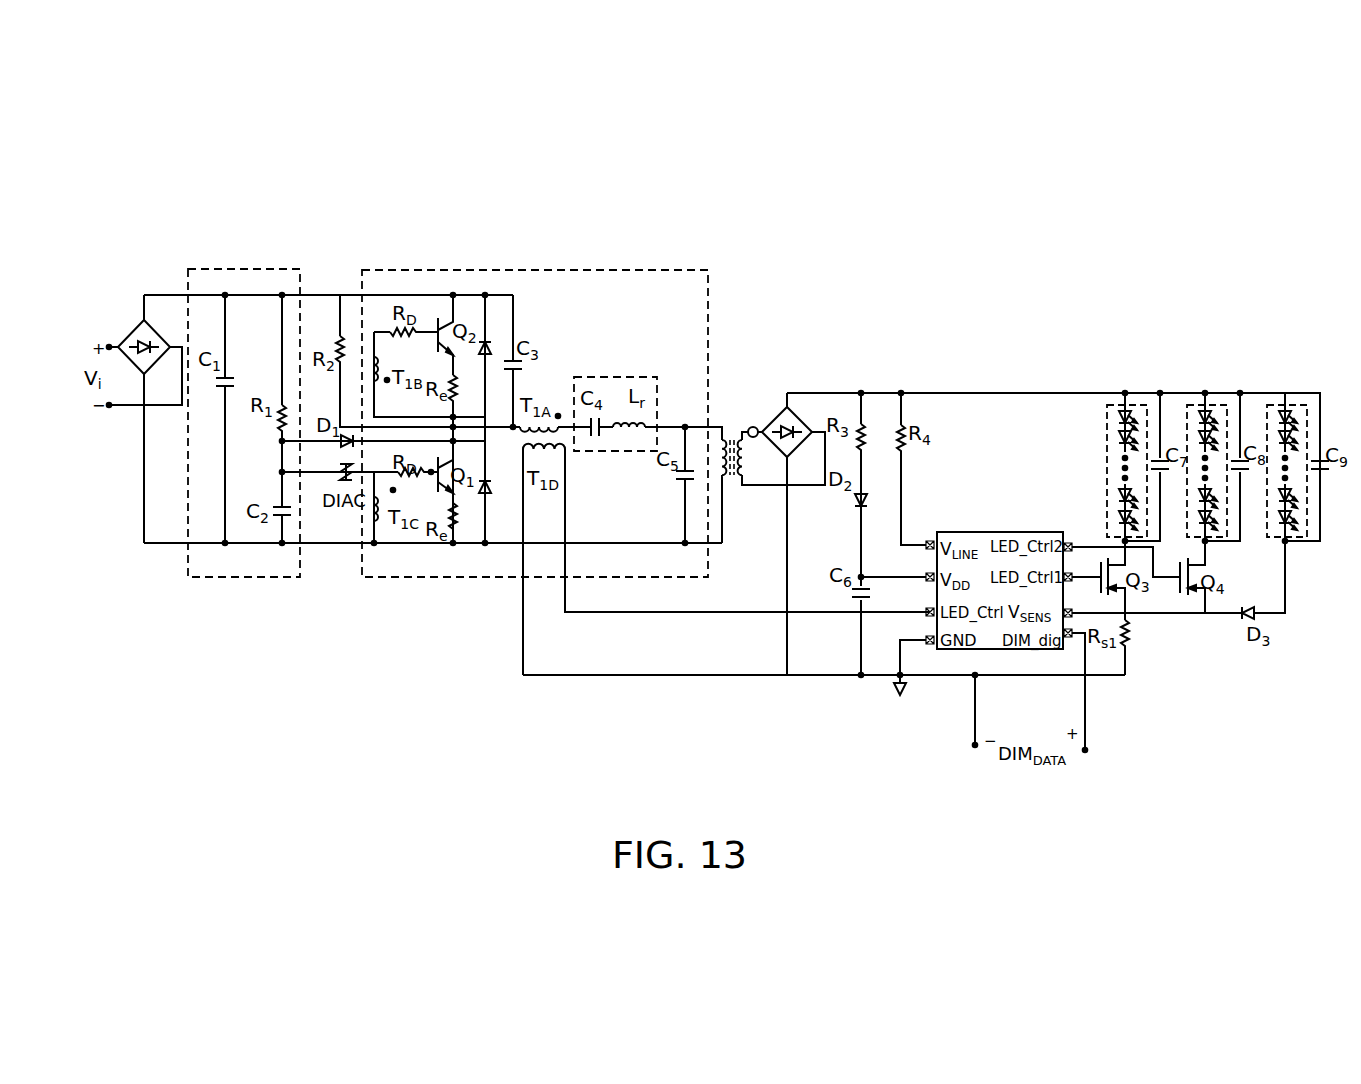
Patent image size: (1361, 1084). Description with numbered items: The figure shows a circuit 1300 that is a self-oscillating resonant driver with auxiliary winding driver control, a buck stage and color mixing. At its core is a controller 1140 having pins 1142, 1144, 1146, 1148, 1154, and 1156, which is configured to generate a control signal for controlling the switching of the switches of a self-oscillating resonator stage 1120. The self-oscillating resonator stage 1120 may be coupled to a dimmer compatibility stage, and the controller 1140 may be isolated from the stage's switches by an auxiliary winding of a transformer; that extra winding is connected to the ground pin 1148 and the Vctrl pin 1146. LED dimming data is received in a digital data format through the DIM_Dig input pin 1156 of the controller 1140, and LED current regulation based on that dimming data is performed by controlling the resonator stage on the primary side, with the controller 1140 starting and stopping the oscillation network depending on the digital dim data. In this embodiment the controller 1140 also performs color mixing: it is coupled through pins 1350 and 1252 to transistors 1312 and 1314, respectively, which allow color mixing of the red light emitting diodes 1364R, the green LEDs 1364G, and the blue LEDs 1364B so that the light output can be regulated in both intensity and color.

The circuit 1300 is at (116, 292).
The self-oscillating resonator stage 1120 is at (684, 268).
The pin 1142 is at (927, 544).
The pin 1144 is at (927, 577).
The Vctrl pin 1146 is at (927, 611).
The ground pin 1148 is at (927, 640).
The controller 1140 is at (958, 650).
The pin 1350 is at (1066, 543).
The pin 1252 is at (1072, 568).
The transistor 1312 is at (1112, 585).
The transistor 1314 is at (1192, 600).
The DIM_Dig input pin 1156 is at (1067, 617).
The pin 1154 is at (1074, 636).
The red light emitting diodes 1364R is at (1134, 403).
The green LEDs 1364G is at (1214, 403).
The blue LEDs 1364B is at (1294, 403).